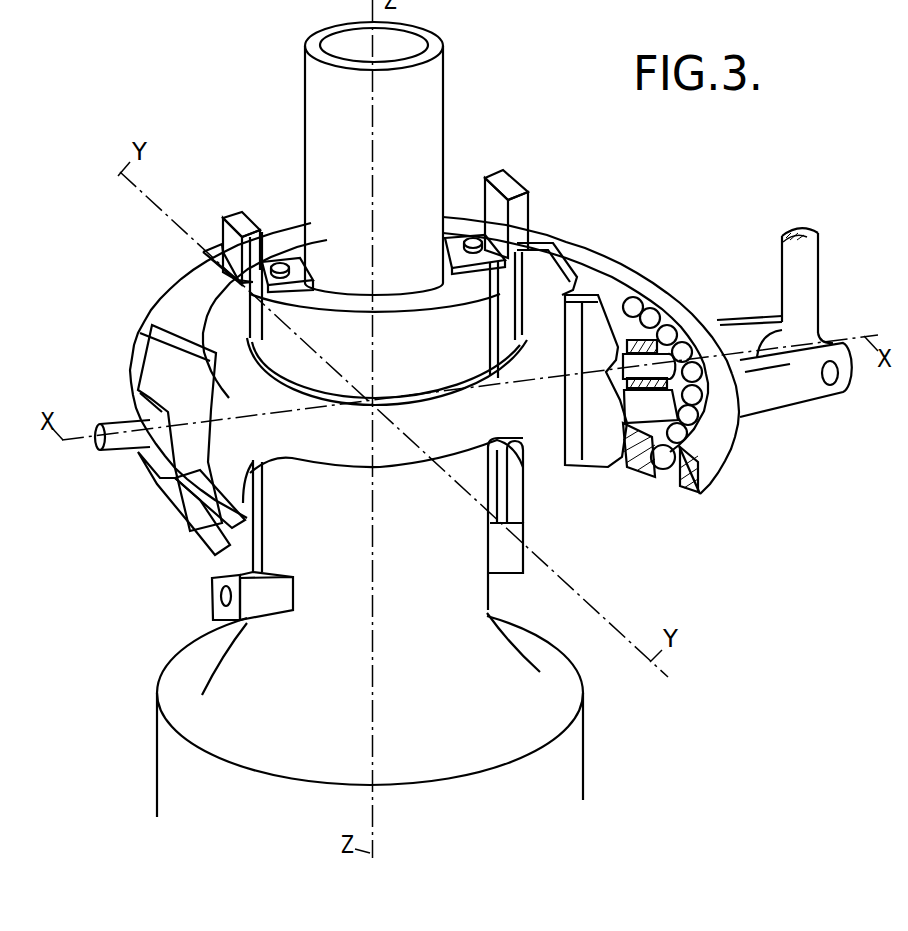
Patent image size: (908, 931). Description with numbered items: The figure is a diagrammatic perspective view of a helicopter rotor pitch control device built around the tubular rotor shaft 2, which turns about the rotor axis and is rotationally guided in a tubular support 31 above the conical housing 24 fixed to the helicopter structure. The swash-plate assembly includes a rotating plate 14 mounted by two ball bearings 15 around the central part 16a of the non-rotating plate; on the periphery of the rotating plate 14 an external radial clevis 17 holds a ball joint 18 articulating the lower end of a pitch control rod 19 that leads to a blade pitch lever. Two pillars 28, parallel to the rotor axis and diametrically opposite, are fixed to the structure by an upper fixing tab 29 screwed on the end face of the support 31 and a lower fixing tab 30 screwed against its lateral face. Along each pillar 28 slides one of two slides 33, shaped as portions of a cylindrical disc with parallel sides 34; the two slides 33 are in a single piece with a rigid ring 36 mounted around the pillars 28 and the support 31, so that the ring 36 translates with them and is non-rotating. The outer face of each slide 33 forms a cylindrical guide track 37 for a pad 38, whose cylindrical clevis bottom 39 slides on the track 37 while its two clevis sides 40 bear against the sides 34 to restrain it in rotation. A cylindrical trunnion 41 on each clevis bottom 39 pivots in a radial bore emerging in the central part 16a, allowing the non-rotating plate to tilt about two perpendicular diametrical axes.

The rotor shaft 2 is at (328, 87).
The rotating plate 14 is at (715, 445).
The ball bearings 15 is at (664, 469).
The central part of the non-rotating plate 16a is at (633, 465).
The external radial clevis 17 is at (805, 387).
The ball joint 18 is at (812, 342).
The pitch control rod 19 is at (806, 262).
The conical housing 24 is at (547, 765).
The pillar 28 is at (230, 212).
The upper fixing tab 29 is at (281, 260).
The lower fixing tab 30 is at (283, 590).
The tubular support 31 is at (305, 665).
The slide 33 is at (195, 262).
The sides of the slide 34 is at (230, 528).
The rigid ring 36 is at (342, 440).
The guide track 37 is at (195, 301).
The pad 38 is at (136, 350).
The clevis bottom 39 is at (153, 483).
The clevis sides 40 is at (188, 480).
The trunnion 41 is at (115, 430).